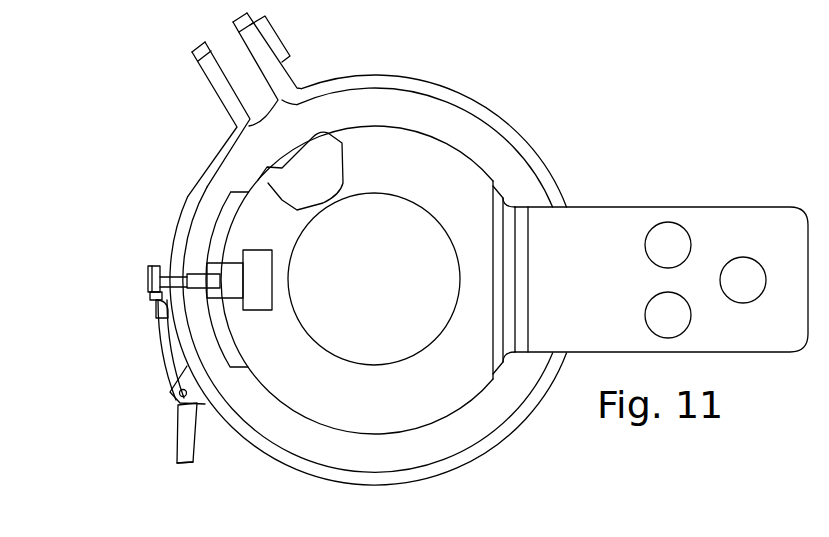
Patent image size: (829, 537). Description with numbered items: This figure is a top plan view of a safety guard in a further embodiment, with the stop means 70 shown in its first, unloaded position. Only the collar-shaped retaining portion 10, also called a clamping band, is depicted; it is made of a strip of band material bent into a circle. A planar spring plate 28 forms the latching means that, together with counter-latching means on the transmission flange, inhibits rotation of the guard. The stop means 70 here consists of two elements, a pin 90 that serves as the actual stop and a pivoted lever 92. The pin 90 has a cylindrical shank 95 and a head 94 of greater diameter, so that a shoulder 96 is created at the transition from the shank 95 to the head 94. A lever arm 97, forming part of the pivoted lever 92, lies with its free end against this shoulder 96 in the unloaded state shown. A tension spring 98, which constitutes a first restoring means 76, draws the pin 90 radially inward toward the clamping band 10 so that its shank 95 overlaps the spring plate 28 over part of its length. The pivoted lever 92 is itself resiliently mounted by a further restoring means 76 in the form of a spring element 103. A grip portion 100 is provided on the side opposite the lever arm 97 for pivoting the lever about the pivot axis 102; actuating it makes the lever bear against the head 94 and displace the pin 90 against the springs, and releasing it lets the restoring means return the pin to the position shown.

The retaining portion 10 is at (402, 76).
The spring plate 28 is at (432, 157).
The stop means 70 is at (134, 263).
The restoring means 76 is at (167, 268).
The pin 90 is at (157, 297).
The pivoted lever 92 is at (166, 326).
The head 94 is at (148, 280).
The shank 95 is at (208, 246).
The shoulder 96 is at (163, 322).
The lever arm 97 is at (167, 356).
The tension spring 98 is at (162, 210).
The grip portion 100 is at (196, 452).
The pivot axis 102 is at (180, 405).
The spring element 103 is at (172, 395).